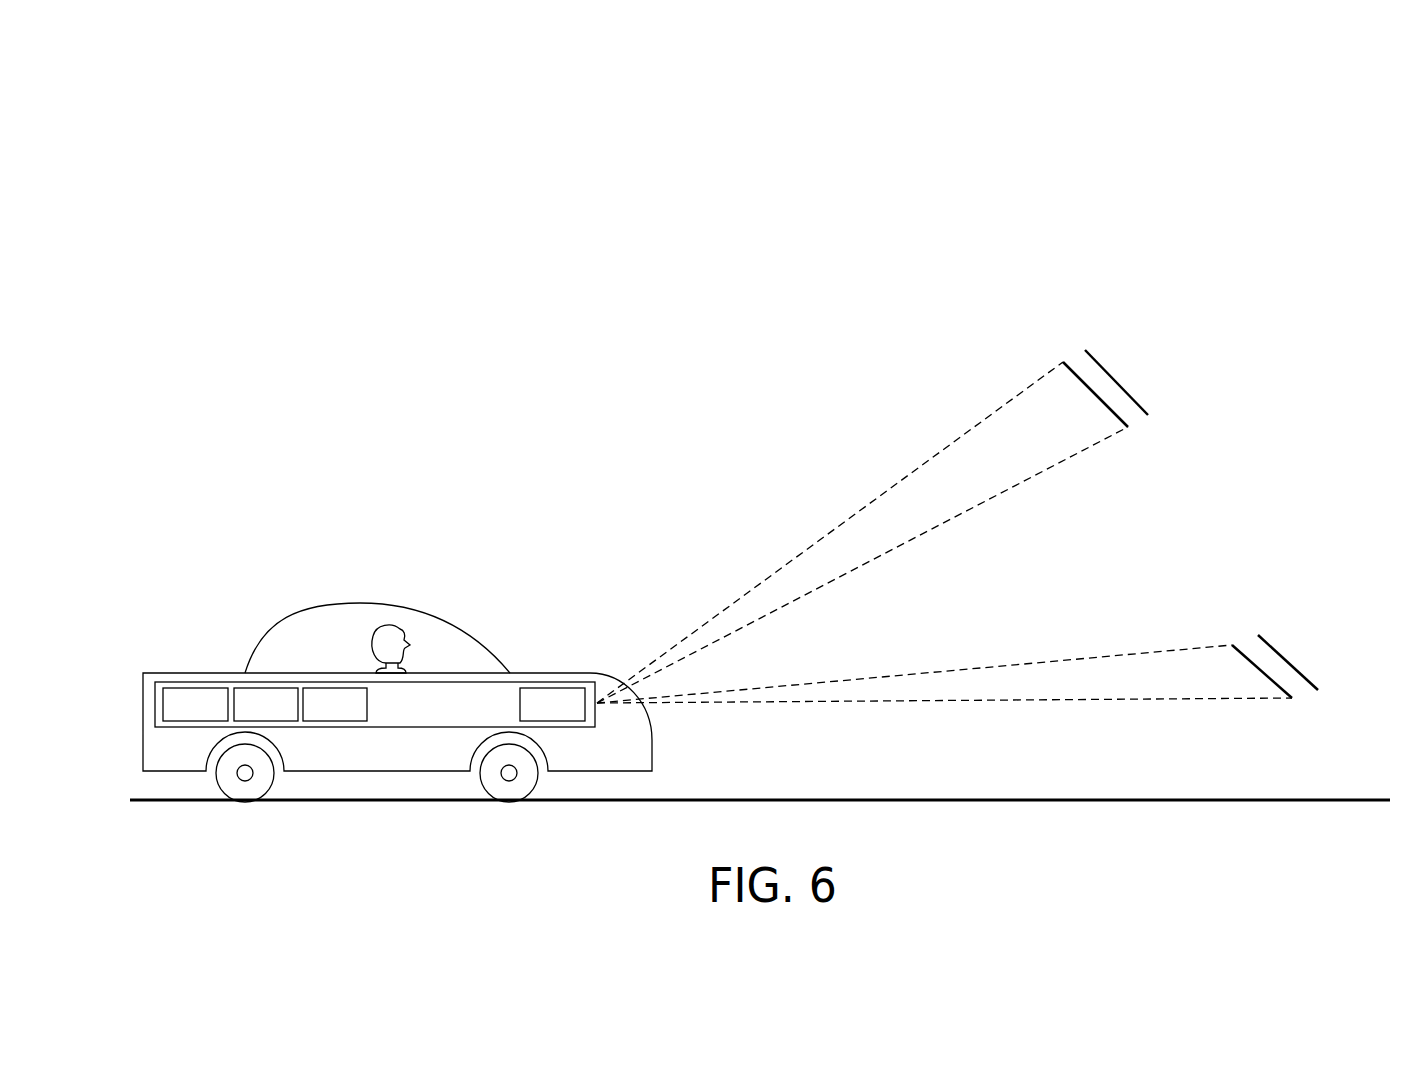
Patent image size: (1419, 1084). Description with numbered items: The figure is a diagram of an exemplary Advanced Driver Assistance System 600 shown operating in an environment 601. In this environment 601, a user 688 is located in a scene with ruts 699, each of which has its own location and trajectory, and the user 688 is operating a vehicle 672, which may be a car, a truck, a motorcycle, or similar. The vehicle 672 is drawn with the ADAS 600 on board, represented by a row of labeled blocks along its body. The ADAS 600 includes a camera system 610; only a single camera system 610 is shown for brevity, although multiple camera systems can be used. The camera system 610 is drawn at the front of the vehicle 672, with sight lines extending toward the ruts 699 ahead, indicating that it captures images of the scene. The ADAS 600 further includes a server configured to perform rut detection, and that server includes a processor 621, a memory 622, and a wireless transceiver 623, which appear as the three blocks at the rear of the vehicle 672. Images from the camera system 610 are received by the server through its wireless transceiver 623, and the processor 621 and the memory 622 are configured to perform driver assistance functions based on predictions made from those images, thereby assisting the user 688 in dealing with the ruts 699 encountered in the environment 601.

The environment 601 is at (297, 133).
The vehicle 672 is at (132, 697).
The user 688 is at (362, 640).
The Advanced Driver Assistance System 600 is at (443, 724).
The processor 621 is at (195, 704).
The memory 622 is at (266, 704).
The wireless transceiver 623 is at (335, 704).
The camera system 610 is at (552, 704).
The ruts 699 is at (1055, 325).